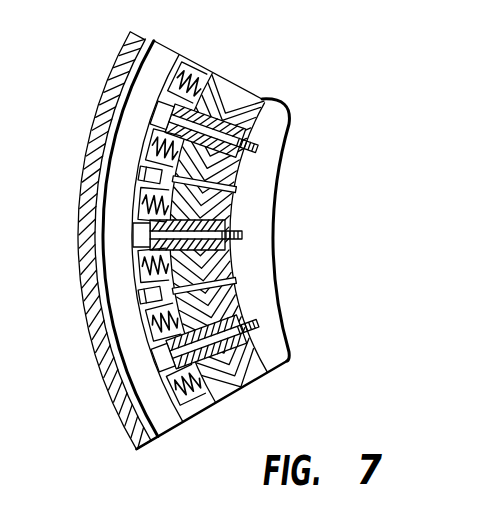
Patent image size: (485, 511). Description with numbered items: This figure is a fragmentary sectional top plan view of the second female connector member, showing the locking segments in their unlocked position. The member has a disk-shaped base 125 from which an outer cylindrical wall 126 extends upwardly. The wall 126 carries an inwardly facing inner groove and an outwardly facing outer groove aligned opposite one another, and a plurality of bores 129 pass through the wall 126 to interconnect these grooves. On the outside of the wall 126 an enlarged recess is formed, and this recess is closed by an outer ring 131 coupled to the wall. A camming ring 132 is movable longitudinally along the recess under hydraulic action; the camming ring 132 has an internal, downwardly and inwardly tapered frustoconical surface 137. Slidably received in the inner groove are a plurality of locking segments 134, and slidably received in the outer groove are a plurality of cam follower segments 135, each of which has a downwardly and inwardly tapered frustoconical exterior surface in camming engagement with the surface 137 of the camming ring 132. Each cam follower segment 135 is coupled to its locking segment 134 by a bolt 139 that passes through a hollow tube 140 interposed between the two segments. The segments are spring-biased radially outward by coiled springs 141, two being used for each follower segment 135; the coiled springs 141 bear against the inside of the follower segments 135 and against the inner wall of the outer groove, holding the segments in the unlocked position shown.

The disk-shaped base 125 is at (262, 191).
The outer cylindrical wall 126 is at (233, 396).
The bores 129 is at (248, 237).
The outer ring 131 is at (122, 38).
The camming ring 132 is at (113, 83).
The locking segment 134 is at (258, 98).
The cam follower segment 135 is at (192, 62).
The frustoconical surface 137 is at (163, 55).
The bolt 139 is at (238, 133).
The hollow tube 140 is at (243, 79).
The coiled springs 141 is at (137, 174).